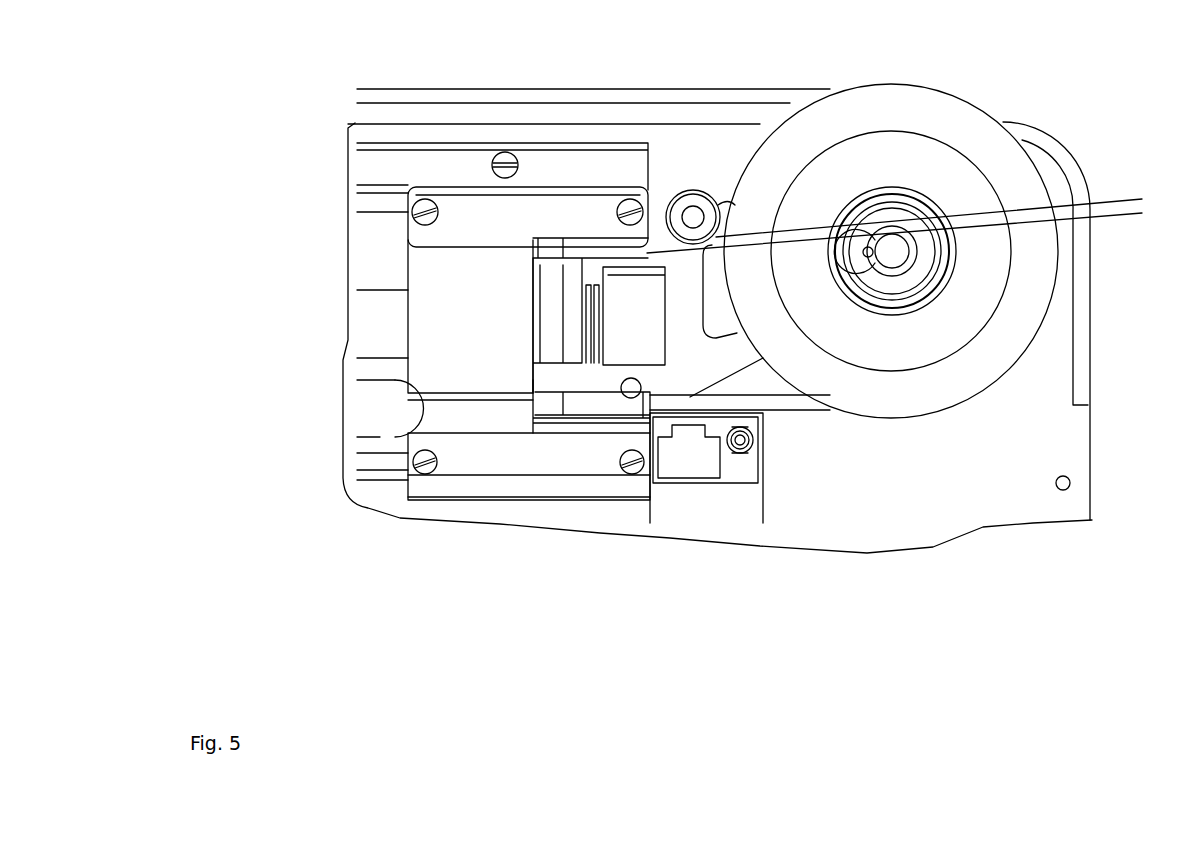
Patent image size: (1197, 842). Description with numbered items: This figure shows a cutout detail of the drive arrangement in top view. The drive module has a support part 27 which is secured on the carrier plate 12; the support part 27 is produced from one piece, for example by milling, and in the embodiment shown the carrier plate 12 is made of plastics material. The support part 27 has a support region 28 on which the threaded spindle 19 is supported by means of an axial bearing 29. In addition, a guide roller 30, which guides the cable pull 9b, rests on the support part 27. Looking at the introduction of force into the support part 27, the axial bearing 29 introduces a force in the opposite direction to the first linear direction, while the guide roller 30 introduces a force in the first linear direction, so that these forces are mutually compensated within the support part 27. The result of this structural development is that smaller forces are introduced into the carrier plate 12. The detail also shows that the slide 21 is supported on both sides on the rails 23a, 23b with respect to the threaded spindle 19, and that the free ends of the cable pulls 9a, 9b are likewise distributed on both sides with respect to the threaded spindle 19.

The cable pull 9a is at (1115, 208).
The cable pull 9b is at (430, 93).
The carrier plate 12 is at (1080, 447).
The threaded spindle 19 is at (588, 284).
The slide 21 is at (418, 259).
The rail 23a is at (362, 163).
The rail 23b is at (365, 488).
The support part 27 is at (717, 358).
The support region 28 is at (628, 298).
The axial bearing 29 is at (596, 284).
The guide roller 30 is at (950, 113).